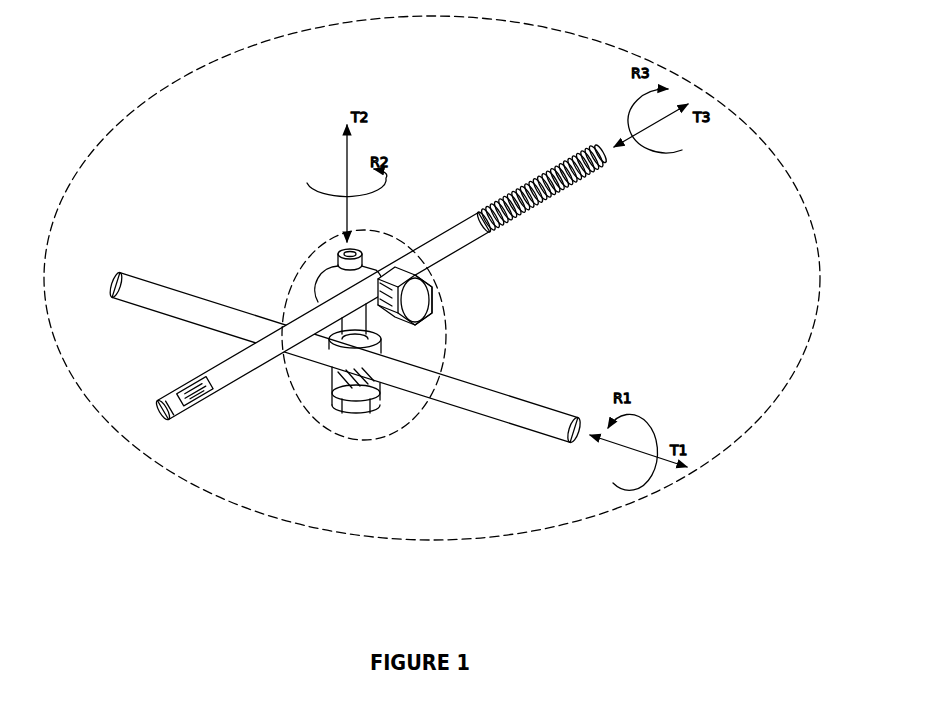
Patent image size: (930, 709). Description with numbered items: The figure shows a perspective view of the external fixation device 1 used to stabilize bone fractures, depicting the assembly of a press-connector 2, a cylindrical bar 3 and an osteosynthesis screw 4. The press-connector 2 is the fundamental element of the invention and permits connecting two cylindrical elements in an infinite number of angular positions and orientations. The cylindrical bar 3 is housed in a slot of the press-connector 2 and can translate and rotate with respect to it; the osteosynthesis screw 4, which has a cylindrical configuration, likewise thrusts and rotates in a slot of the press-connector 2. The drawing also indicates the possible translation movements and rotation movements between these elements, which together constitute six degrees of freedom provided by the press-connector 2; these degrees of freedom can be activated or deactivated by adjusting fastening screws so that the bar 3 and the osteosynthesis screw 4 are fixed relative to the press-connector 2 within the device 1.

The external fixation device 1 is at (138, 103).
The press-connector 2 is at (398, 238).
The cylindrical bar 3 is at (163, 300).
The osteosynthesis screw 4 is at (227, 368).